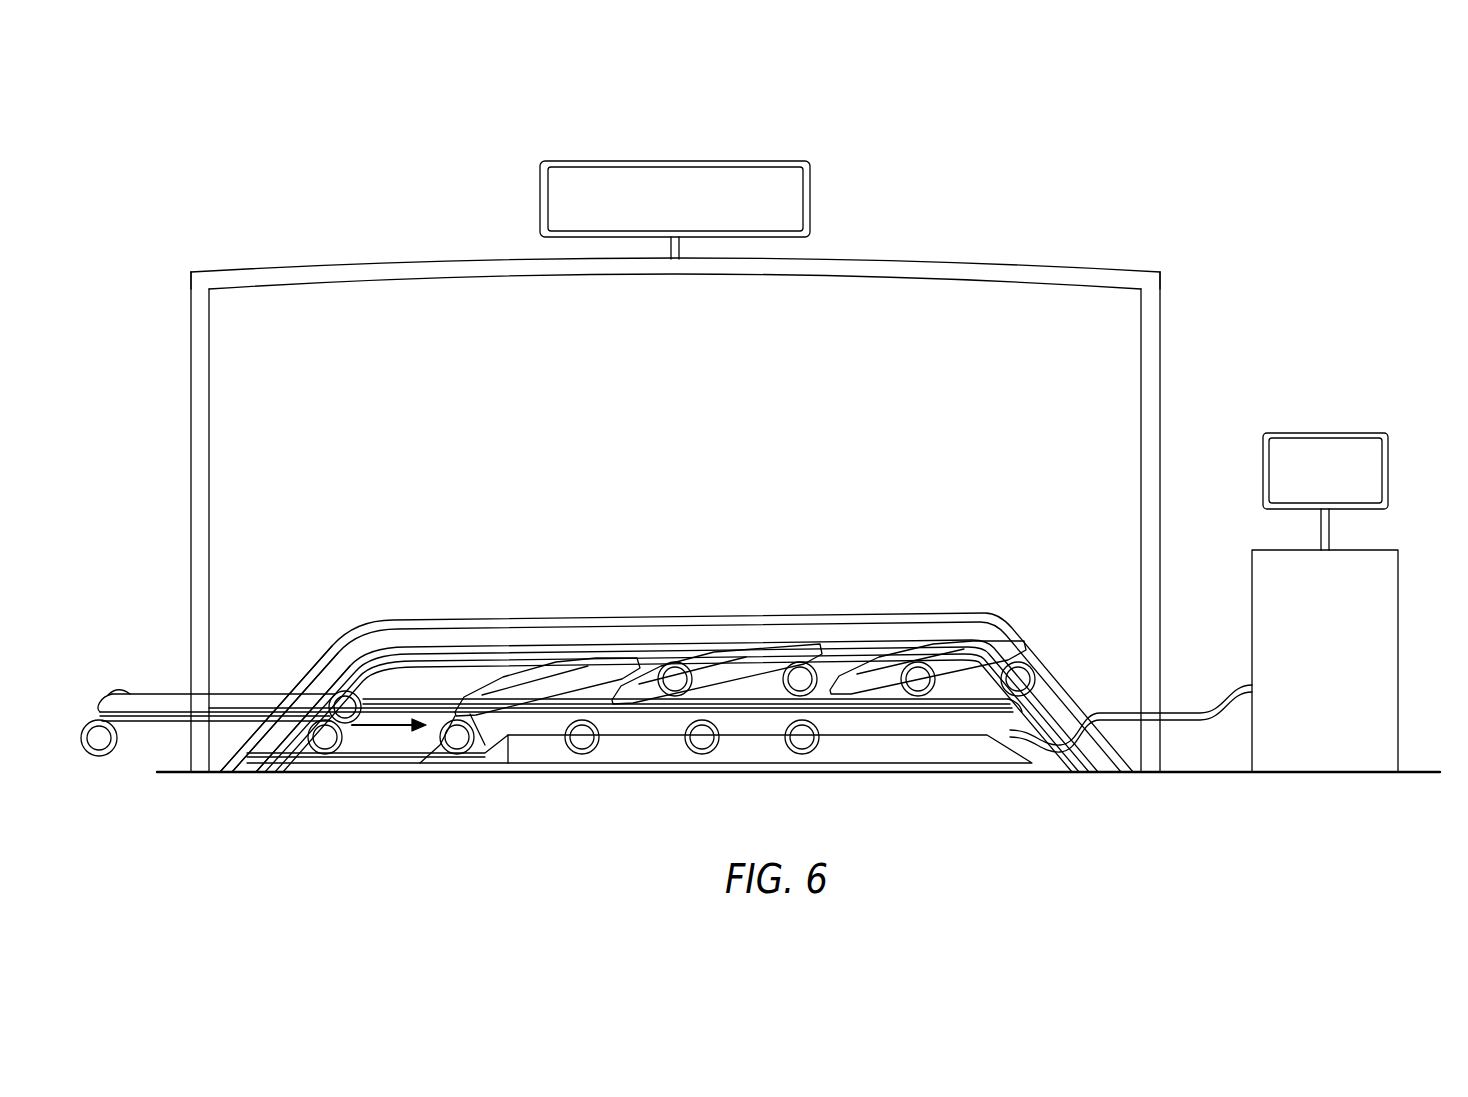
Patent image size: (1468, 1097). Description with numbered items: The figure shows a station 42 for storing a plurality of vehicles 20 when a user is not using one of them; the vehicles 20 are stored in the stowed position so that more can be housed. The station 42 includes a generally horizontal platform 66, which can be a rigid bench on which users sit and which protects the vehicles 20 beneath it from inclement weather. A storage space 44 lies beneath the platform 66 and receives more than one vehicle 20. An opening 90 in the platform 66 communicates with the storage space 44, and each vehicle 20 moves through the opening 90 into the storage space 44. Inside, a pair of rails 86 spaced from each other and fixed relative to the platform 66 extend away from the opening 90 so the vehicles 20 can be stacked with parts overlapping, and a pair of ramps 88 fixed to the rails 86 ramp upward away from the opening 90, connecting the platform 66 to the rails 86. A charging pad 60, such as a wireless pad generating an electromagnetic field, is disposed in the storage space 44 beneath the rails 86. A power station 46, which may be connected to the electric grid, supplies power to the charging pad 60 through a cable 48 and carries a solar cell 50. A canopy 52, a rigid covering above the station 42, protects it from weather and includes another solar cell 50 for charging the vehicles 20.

The station 42 is at (673, 486).
The canopy 52 is at (1120, 270).
The solar cell 50 is at (800, 162).
The power station 46 is at (1398, 585).
The cable 48 is at (1183, 722).
The platform 66 is at (430, 618).
The opening 90 is at (290, 678).
The rails 86 is at (877, 703).
The storage space 44 is at (350, 681).
The charging pad 60 is at (928, 752).
The ramps 88 is at (485, 745).
The vehicle 20 is at (645, 692).